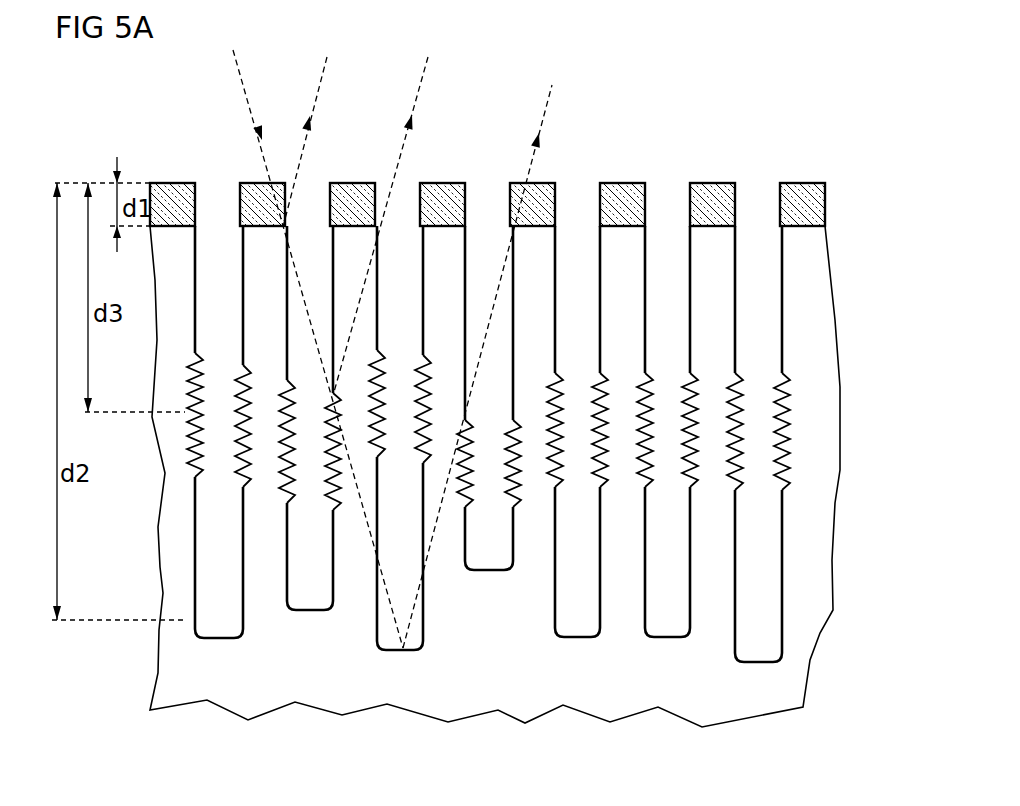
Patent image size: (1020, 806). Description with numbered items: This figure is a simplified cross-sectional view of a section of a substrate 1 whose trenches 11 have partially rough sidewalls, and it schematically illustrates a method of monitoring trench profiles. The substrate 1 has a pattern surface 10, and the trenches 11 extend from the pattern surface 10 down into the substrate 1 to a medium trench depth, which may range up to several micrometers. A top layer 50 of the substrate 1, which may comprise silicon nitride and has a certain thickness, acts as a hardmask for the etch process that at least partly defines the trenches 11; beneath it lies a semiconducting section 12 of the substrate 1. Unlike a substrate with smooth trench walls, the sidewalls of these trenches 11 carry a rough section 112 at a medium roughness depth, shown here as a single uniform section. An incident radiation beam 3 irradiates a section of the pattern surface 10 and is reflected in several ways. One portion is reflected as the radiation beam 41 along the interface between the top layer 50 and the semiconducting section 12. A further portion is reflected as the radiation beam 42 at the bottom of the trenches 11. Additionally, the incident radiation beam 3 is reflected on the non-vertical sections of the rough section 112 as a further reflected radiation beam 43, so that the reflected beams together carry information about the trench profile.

The substrate 1 is at (202, 722).
The incident radiation beam 3 is at (244, 90).
The pattern surface 10 is at (800, 180).
The trenches 11 is at (758, 210).
The semiconducting section 12 is at (817, 274).
The radiation beam 41 is at (319, 90).
The radiation beam 42 is at (547, 105).
The further reflected radiation beam 43 is at (419, 90).
The top layer 50 is at (812, 200).
The rough section 112 is at (790, 438).